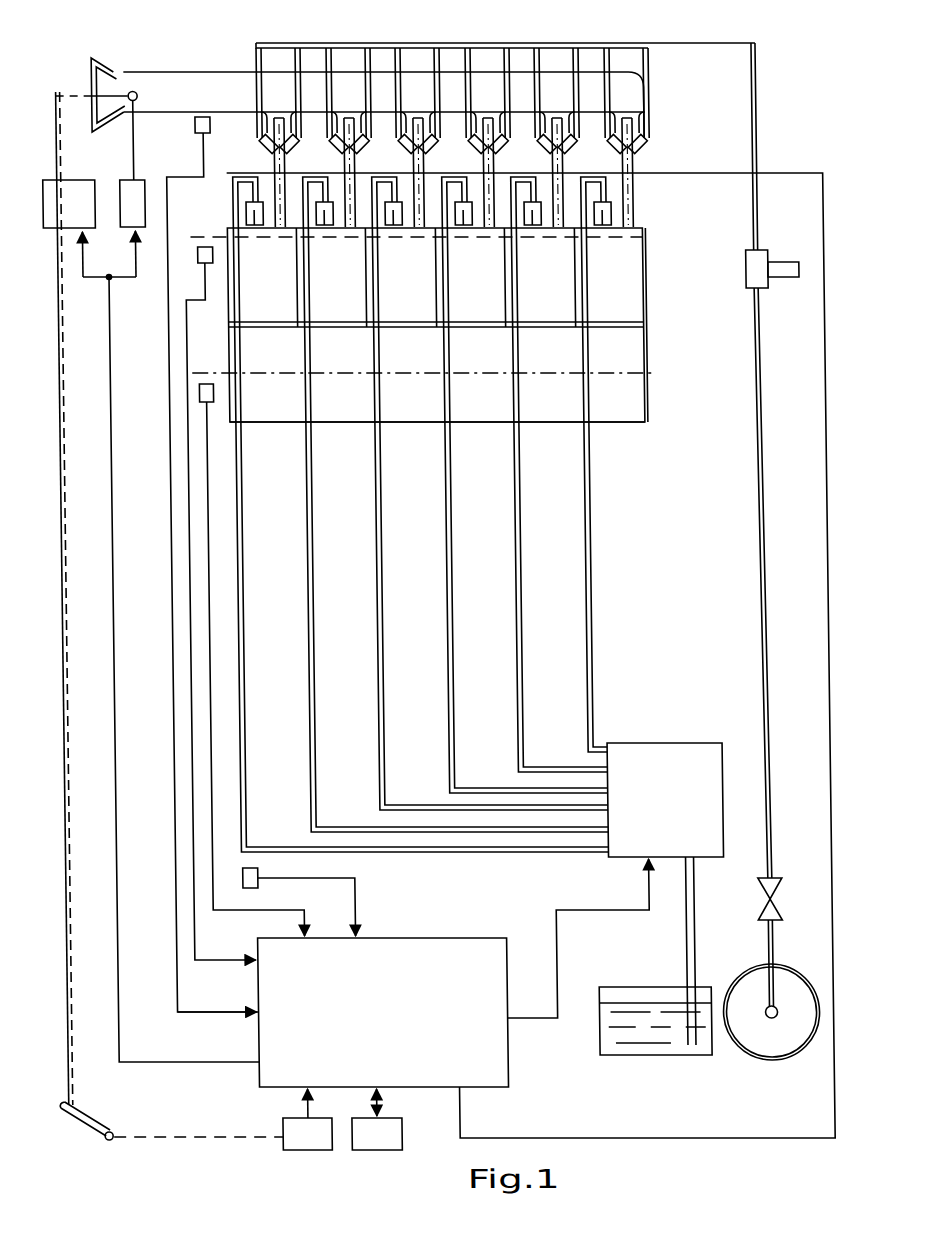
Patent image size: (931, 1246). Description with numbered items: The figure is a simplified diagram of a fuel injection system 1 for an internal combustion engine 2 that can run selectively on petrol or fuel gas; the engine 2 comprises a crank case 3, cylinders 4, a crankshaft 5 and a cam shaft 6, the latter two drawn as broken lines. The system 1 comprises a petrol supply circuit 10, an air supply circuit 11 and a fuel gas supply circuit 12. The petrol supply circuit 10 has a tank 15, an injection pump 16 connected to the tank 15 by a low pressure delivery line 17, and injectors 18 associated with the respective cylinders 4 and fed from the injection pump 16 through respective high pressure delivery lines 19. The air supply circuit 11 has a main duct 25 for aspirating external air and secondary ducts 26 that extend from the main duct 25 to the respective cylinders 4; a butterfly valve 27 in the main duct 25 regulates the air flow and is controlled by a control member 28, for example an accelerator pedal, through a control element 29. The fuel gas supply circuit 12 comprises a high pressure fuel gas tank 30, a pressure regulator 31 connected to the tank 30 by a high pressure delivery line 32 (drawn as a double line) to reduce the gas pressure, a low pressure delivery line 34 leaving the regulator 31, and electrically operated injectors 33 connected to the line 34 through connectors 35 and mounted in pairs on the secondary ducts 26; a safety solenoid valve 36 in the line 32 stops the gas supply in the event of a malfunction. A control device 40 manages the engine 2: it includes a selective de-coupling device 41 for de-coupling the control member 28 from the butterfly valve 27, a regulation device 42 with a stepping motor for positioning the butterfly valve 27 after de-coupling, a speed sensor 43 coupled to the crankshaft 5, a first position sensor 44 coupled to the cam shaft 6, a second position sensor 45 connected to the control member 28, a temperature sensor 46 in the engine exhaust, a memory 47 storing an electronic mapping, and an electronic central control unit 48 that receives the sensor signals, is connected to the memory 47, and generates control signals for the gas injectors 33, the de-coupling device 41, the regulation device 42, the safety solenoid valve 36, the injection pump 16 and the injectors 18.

The fuel injection system 1 is at (781, 114).
The internal combustion engine 2 is at (647, 345).
The crank case 3 is at (625, 405).
The cylinders 4 is at (266, 302).
The crankshaft 5 is at (652, 375).
The cam shaft 6 is at (645, 238).
The petrol supply circuit 10 is at (675, 960).
The air supply circuit 11 is at (126, 62).
The fuel gas supply circuit 12 is at (790, 966).
The tank 15 is at (627, 1055).
The injection pump 16 is at (688, 748).
The low pressure delivery line 17 is at (686, 920).
The injectors 18 is at (246, 212).
The high pressure delivery lines 19 is at (238, 697).
The main duct 25 is at (221, 75).
The secondary ducts 26 is at (275, 190).
The butterfly valve 27 is at (139, 92).
The control member 28 is at (75, 1130).
The control element 29 is at (57, 905).
The high pressure fuel gas tank 30 is at (748, 1040).
The pressure regulator 31 is at (760, 278).
The high pressure delivery line 32 is at (778, 483).
The electrically operated injectors 33 is at (270, 132).
The low pressure delivery line 34 is at (752, 90).
The connectors 35 is at (260, 47).
The safety solenoid valve 36 is at (766, 880).
The control device 40 is at (482, 912).
The selective de-coupling device 41 is at (50, 215).
The regulation device 42 is at (136, 196).
The speed sensor 43 is at (197, 393).
The first position sensor 44 is at (197, 258).
The second position sensor 45 is at (296, 1150).
The temperature sensor 46 is at (244, 868).
The memory 47 is at (374, 1150).
The electronic central control unit 48 is at (395, 938).